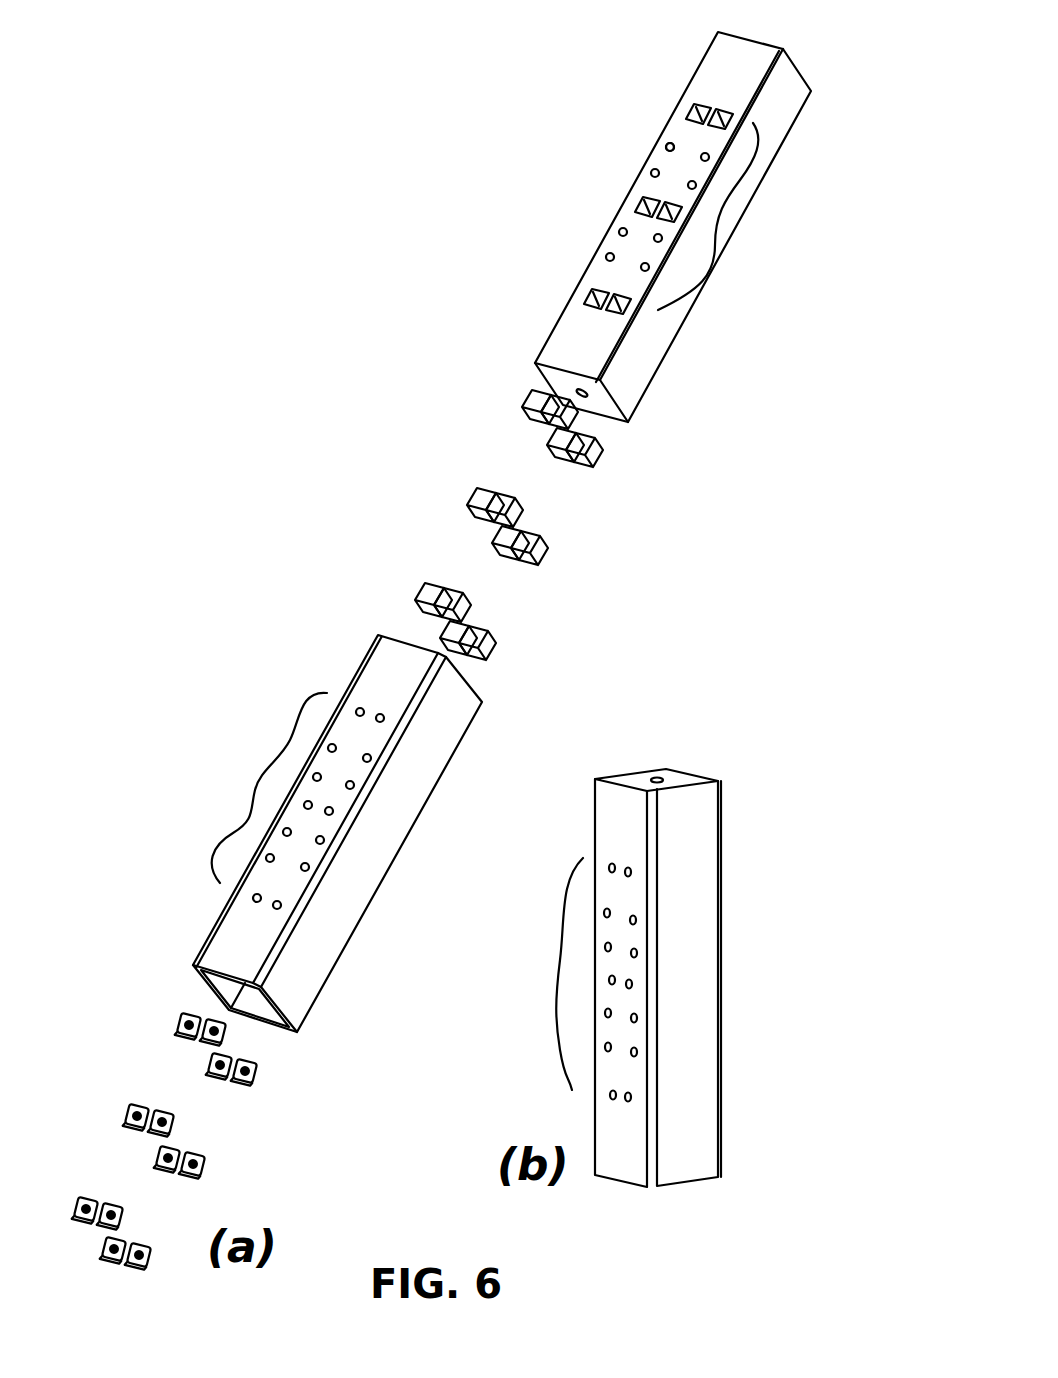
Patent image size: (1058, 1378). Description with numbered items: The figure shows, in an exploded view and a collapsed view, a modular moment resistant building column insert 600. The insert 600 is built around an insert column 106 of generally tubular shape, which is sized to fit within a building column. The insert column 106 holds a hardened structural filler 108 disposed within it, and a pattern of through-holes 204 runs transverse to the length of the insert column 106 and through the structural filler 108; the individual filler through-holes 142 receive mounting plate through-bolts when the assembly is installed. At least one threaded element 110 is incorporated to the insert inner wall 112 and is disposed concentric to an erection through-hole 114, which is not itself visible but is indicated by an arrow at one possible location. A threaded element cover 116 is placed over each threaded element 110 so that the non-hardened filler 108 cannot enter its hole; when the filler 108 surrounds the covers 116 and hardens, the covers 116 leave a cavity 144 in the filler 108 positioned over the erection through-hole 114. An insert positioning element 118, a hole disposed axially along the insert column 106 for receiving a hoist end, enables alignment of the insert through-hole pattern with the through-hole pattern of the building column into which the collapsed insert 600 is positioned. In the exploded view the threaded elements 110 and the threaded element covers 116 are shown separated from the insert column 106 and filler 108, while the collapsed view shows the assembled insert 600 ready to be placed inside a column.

The modular moment resistant building column insert 600 is at (240, 218).
The insert column 106 is at (377, 635).
The hardened structural filler 108 is at (700, 60).
The threaded element 110 is at (185, 1012).
The insert inner wall 112 is at (275, 1031).
The erection through-hole 114 is at (630, 202).
The threaded element cover 116 is at (523, 402).
The insert positioning element 118 is at (588, 396).
The filler through-hole 142 is at (668, 144).
The cavity 144 is at (697, 100).
The pattern of through-holes 204 is at (715, 230).